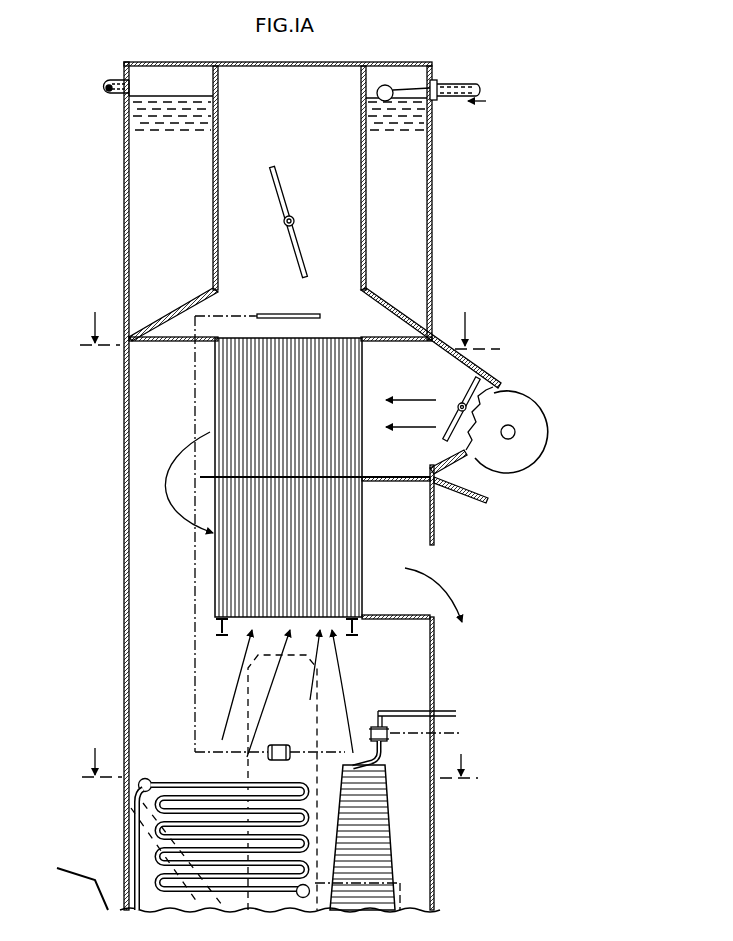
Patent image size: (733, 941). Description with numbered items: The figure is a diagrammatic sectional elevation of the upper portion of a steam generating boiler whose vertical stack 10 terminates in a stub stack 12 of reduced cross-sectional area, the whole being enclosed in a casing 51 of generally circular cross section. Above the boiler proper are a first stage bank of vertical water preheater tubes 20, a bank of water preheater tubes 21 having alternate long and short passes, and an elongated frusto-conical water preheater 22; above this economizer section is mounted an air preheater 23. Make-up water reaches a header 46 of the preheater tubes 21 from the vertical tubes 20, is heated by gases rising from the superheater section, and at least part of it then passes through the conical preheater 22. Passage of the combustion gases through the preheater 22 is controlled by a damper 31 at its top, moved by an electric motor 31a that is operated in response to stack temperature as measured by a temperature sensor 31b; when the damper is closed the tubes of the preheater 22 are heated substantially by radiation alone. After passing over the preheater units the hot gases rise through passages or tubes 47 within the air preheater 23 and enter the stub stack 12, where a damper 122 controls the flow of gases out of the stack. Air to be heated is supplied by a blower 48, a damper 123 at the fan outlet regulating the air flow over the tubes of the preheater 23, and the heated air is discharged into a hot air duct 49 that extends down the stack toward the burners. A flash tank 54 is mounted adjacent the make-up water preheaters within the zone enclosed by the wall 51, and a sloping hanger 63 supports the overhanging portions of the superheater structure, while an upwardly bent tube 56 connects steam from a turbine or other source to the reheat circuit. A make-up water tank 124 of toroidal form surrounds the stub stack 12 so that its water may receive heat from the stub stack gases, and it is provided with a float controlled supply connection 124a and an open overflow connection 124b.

The vertical stack 10 is at (100, 529).
The stub stack 12 is at (370, 136).
The vertical water preheater tubes 20 is at (134, 851).
The water preheater tubes 21 is at (193, 782).
The water preheater 22 is at (386, 788).
The air preheater 23 is at (351, 376).
The damper 31 is at (360, 760).
The electric motor 31a is at (284, 760).
The temperature sensor 31b is at (282, 314).
The header 46 is at (146, 777).
The passages or tubes 47 is at (215, 405).
The blower 48 is at (535, 415).
The hot air duct 49 is at (490, 563).
The casing 51 is at (124, 386).
The flash tank 54 is at (246, 712).
The upwardly bent tube 56 is at (75, 886).
The sloping hanger 63 is at (140, 832).
The damper 122 is at (280, 178).
The damper 123 is at (473, 386).
The tank 124 is at (127, 152).
The float controlled supply connection 124a is at (436, 84).
The open overflow connection 124b is at (108, 82).